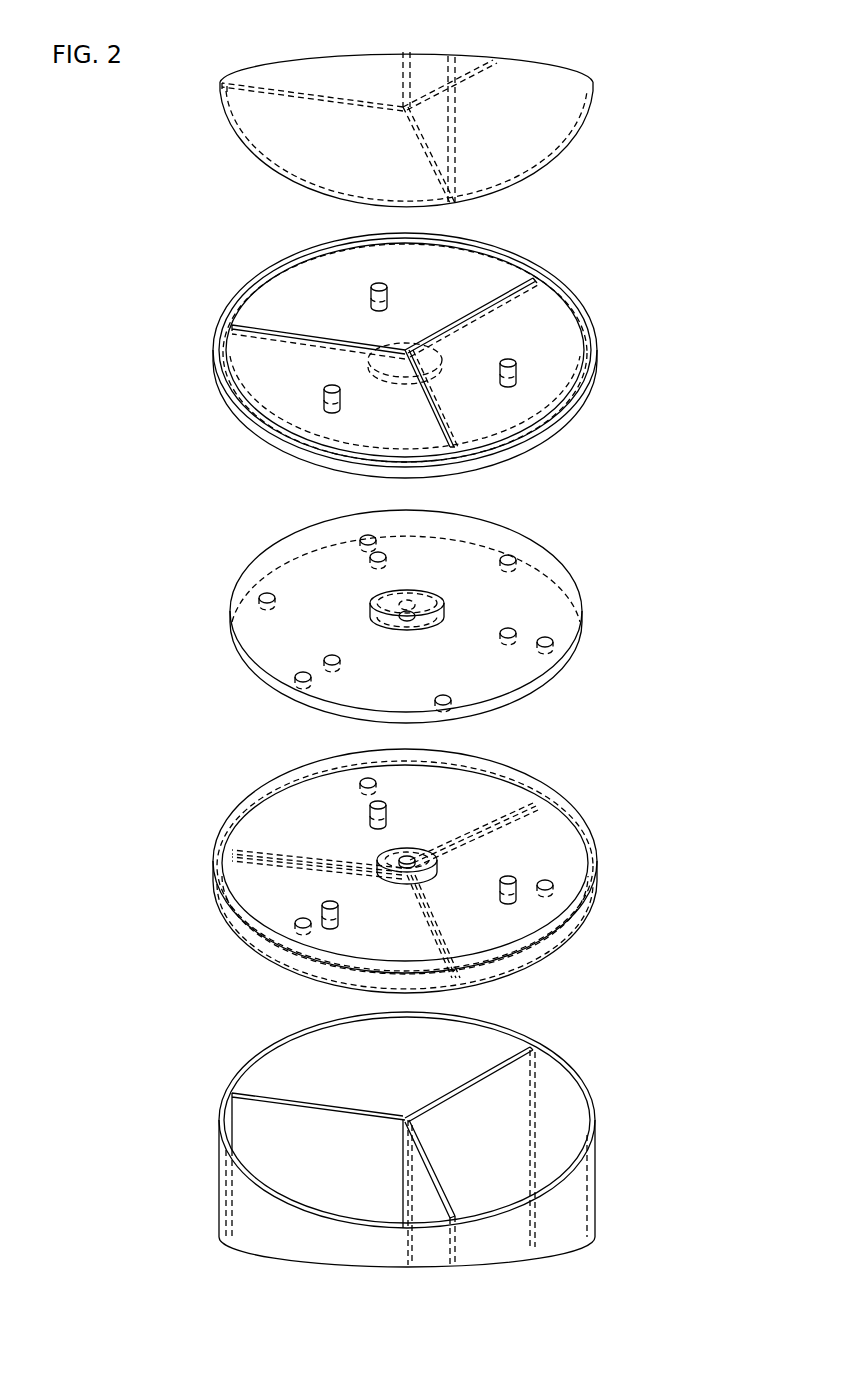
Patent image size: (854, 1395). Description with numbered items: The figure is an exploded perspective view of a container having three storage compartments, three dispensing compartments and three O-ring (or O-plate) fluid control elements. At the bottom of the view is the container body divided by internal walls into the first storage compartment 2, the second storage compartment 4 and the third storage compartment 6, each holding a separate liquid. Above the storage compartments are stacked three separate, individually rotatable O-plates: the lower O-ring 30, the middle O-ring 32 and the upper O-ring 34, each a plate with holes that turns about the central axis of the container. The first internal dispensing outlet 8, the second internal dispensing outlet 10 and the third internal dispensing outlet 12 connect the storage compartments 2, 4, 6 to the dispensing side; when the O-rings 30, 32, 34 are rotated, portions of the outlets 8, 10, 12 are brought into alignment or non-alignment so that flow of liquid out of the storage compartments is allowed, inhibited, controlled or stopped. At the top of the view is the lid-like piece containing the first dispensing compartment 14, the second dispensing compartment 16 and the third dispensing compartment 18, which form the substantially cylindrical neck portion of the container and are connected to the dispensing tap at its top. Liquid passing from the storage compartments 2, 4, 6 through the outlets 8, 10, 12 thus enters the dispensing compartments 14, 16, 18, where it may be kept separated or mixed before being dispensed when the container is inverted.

The first storage compartment 2 is at (481, 1139).
The second storage compartment 4 is at (313, 1141).
The third storage compartment 6 is at (281, 1192).
The first internal dispensing outlet 8 is at (520, 378).
The second internal dispensing outlet 10 is at (368, 295).
The third internal dispensing outlet 12 is at (322, 397).
The first dispensing compartment 14 is at (459, 130).
The second dispensing compartment 16 is at (347, 65).
The third dispensing compartment 18 is at (245, 128).
The lower O-ring 30 is at (595, 837).
The middle O-ring 32 is at (580, 638).
The upper O-ring 34 is at (578, 292).